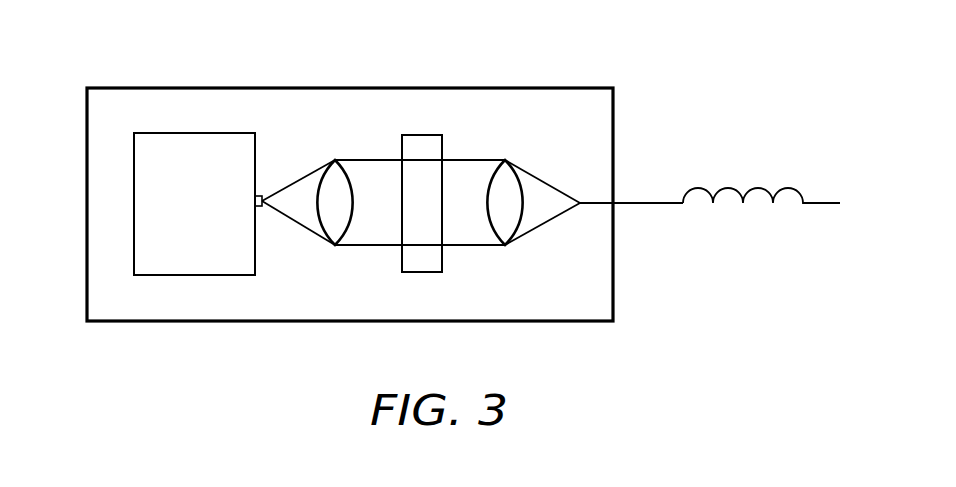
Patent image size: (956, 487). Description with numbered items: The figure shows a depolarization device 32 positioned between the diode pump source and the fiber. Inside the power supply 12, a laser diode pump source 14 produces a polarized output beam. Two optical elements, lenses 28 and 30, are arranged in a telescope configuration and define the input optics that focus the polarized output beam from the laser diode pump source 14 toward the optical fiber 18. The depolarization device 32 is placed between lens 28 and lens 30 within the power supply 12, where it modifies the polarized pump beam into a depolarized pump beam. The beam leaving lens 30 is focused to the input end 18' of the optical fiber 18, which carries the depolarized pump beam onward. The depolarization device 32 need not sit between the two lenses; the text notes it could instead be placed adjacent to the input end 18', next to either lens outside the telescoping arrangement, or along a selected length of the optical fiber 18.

The power supply 12 is at (332, 175).
The laser diode pump source 14 is at (198, 157).
The lens 28 is at (321, 181).
The lens 30 is at (508, 182).
The depolarization device 32 is at (545, 254).
The optical fiber 18 is at (621, 252).
The input end 18' is at (770, 239).